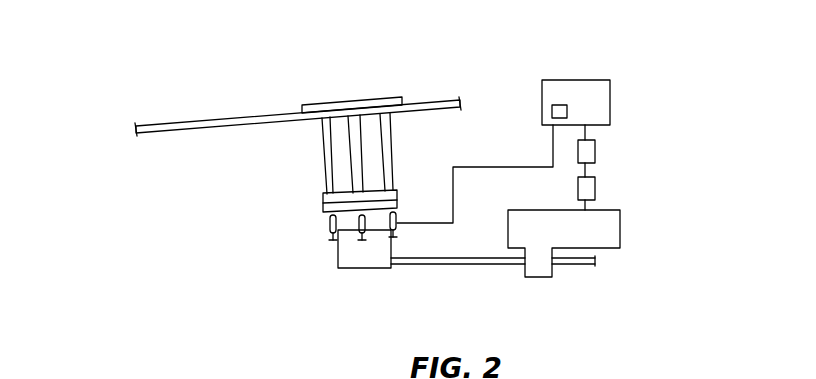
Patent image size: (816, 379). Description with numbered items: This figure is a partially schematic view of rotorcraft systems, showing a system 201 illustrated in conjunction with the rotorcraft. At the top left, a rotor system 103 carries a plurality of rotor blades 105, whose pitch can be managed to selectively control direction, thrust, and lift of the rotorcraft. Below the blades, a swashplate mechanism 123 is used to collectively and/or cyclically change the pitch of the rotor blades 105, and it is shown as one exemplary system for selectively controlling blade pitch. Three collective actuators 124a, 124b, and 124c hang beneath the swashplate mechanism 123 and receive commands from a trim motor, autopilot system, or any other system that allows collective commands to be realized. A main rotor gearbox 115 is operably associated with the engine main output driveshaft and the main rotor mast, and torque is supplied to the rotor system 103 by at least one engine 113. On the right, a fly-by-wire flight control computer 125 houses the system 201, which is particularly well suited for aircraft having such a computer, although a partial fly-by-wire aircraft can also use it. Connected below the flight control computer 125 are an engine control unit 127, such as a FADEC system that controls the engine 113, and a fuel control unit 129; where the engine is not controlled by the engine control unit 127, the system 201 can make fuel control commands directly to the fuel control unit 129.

The rotor system 103 is at (289, 98).
The rotor blades 105 is at (150, 126).
The engine 113 is at (620, 235).
The main rotor gearbox 115 is at (378, 268).
The swashplate mechanism 123 is at (284, 208).
The collective actuator 124a is at (330, 220).
The collective actuator 124b is at (360, 236).
The collective actuator 124c is at (399, 228).
The flight control computer 125 is at (582, 80).
The engine control unit 127 is at (595, 157).
The fuel control unit 129 is at (595, 191).
The system 201 is at (543, 103).